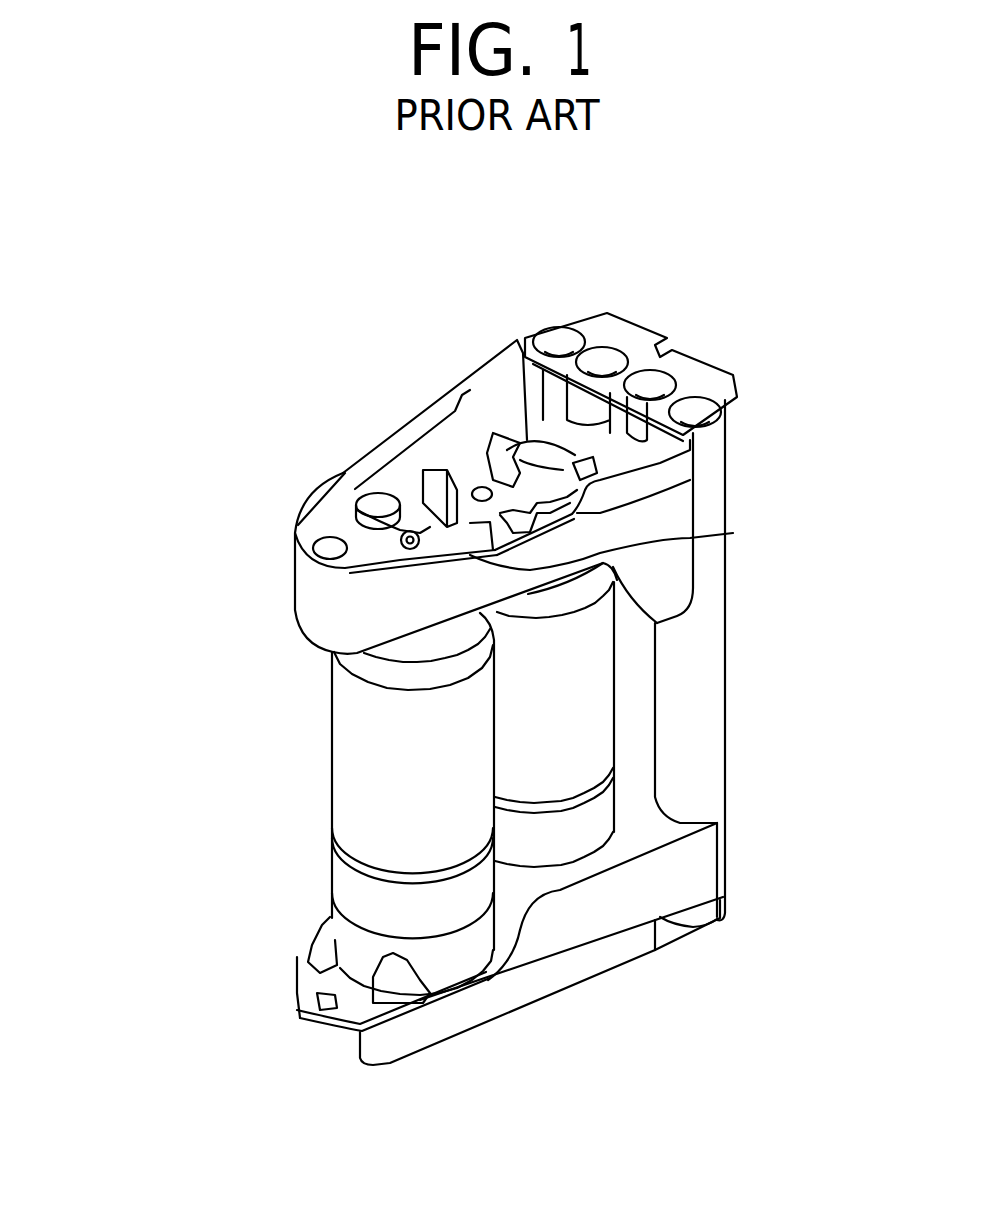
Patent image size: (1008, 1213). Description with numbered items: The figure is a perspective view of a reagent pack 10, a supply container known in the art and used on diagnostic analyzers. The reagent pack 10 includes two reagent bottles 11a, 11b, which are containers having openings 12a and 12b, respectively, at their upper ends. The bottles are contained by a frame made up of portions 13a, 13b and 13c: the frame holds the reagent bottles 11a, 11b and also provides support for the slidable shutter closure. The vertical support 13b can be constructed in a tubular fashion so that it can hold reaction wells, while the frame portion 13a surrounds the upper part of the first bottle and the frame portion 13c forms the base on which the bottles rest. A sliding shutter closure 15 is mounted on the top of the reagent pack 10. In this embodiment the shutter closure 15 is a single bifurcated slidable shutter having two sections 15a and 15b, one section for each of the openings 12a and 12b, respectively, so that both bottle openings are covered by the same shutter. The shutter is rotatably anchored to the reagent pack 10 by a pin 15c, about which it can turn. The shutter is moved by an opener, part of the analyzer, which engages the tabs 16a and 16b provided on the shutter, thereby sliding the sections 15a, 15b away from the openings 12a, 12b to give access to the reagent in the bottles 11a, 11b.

The reagent pack 10 is at (140, 538).
The reagent bottle 11a is at (327, 777).
The reagent bottle 11b is at (600, 720).
The opening 12a is at (400, 532).
The opening 12b is at (527, 455).
The frame 13a is at (298, 613).
The vertical support 13b is at (700, 670).
The frame 13c is at (490, 997).
The sliding shutter closure 15 is at (386, 500).
The shutter section 15a is at (376, 462).
The shutter section 15b is at (685, 443).
The pin 15c is at (480, 488).
The tab 16a is at (690, 488).
The tab 16b is at (735, 537).